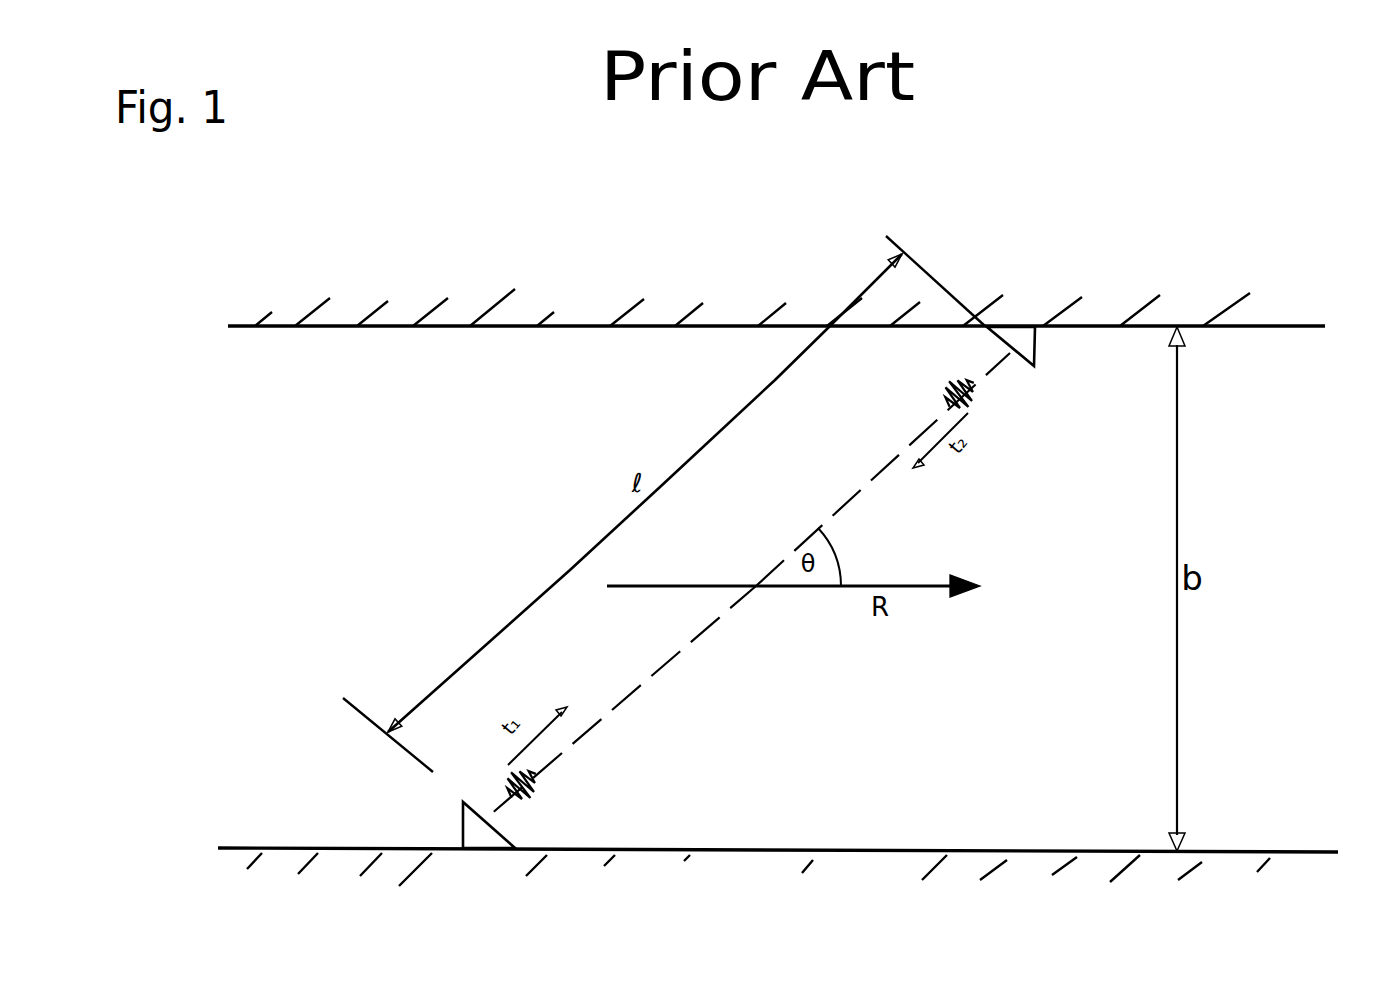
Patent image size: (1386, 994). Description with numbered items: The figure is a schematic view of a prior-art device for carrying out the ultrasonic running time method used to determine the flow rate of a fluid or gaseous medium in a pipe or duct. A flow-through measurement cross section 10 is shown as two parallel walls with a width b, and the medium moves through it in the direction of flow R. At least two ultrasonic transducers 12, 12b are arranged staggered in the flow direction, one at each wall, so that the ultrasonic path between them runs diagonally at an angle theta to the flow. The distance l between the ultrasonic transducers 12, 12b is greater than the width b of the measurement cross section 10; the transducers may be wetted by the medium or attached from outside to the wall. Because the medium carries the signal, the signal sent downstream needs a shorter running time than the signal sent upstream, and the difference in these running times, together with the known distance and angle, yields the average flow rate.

The flow-through measurement cross section 10 is at (450, 295).
The ultrasonic transducer 12 is at (478, 838).
The ultrasonic transducer 12b is at (1023, 325).